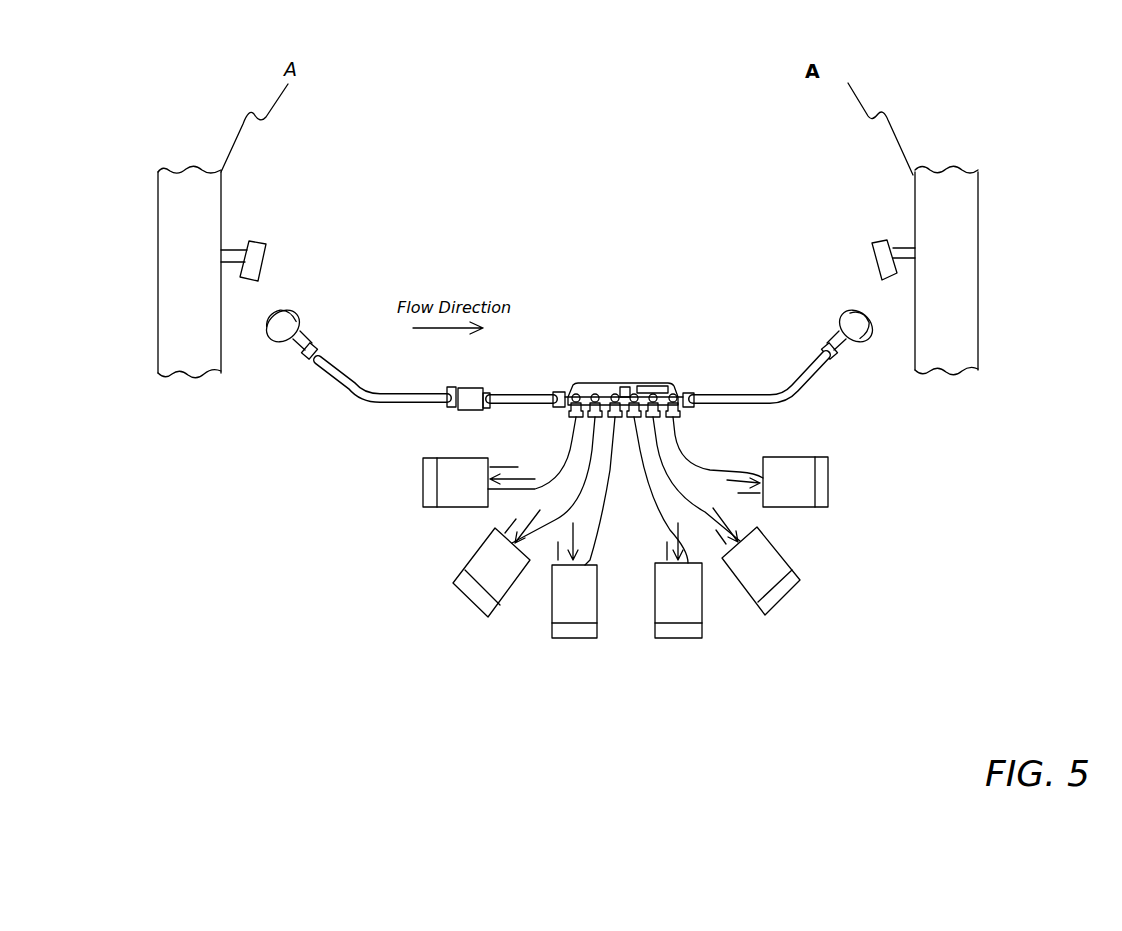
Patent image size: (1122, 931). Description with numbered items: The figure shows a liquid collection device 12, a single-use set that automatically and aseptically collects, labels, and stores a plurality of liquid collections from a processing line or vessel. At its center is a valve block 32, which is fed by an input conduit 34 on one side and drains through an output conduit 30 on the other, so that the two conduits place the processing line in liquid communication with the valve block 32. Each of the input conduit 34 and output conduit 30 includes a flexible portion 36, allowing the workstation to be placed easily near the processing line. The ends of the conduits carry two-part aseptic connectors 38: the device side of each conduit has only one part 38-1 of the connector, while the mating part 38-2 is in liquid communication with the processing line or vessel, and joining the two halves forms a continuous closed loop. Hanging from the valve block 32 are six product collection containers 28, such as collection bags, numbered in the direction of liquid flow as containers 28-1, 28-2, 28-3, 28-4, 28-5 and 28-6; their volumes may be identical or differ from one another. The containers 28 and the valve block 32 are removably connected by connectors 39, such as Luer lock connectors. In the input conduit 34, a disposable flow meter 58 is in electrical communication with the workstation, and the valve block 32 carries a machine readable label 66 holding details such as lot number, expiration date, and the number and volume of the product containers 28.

The liquid collection device 12 is at (638, 157).
The product collection containers 28 is at (632, 584).
The first container 28-1 is at (479, 482).
The second container 28-2 is at (496, 563).
The third container 28-3 is at (574, 580).
The fourth container 28-4 is at (678, 580).
The fifth container 28-5 is at (756, 561).
The sixth container 28-6 is at (777, 482).
The output conduit 30 is at (797, 307).
The valve block 32 is at (626, 357).
The input conduit 34 is at (335, 299).
The flexible portion 36 is at (357, 401).
The two-part aseptic connector 38 is at (249, 282).
The connector part 38-1 is at (293, 310).
The mating connector part 38-2 is at (266, 244).
The connectors 39 is at (557, 391).
The disposable flow meter 58 is at (485, 387).
The machine readable label 66 is at (642, 385).